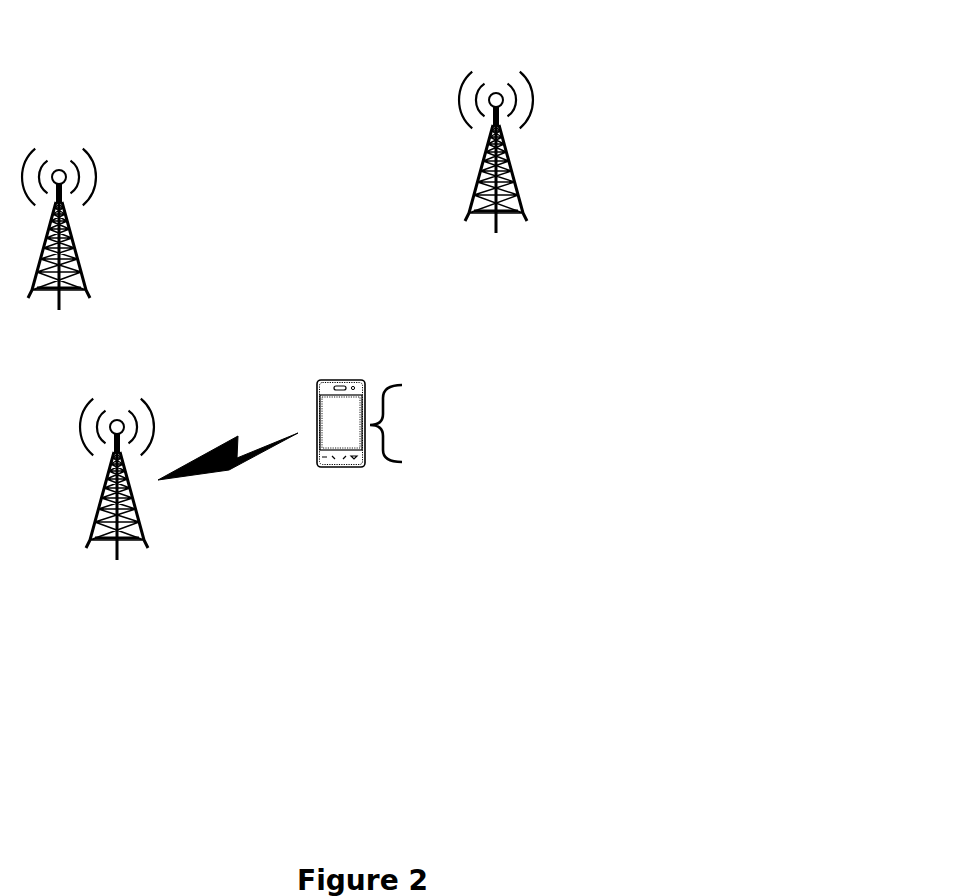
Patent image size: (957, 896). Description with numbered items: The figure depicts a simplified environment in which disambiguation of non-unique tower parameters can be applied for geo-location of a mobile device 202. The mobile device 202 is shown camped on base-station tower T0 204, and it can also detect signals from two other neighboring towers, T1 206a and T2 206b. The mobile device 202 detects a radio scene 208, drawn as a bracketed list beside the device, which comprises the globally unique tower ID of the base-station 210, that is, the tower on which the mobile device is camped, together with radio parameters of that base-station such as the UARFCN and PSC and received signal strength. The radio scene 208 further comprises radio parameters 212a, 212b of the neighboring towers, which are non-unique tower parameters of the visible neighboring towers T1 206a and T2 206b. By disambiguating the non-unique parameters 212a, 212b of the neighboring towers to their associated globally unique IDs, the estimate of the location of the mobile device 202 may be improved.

The mobile device 202 is at (341, 378).
The base-station tower T0 204 is at (117, 470).
The neighboring tower T1 206a is at (59, 220).
The neighboring tower T2 206b is at (496, 143).
The radio scene 208 is at (596, 383).
The globally unique tower ID of the base-station (GUIDT0) 210 is at (707, 399).
The radio parameters of neighboring tower T1 212a is at (622, 425).
The radio parameters of neighboring tower T2 212b is at (622, 452).